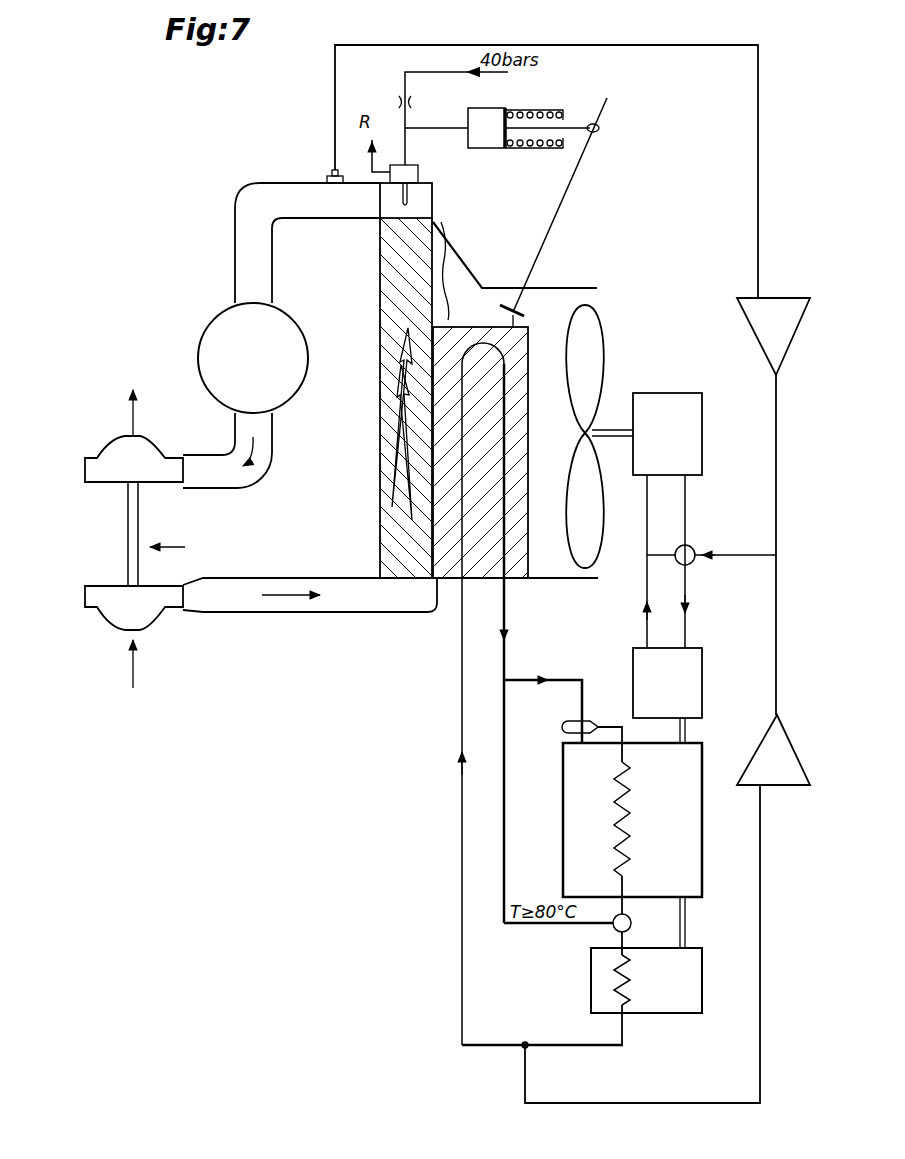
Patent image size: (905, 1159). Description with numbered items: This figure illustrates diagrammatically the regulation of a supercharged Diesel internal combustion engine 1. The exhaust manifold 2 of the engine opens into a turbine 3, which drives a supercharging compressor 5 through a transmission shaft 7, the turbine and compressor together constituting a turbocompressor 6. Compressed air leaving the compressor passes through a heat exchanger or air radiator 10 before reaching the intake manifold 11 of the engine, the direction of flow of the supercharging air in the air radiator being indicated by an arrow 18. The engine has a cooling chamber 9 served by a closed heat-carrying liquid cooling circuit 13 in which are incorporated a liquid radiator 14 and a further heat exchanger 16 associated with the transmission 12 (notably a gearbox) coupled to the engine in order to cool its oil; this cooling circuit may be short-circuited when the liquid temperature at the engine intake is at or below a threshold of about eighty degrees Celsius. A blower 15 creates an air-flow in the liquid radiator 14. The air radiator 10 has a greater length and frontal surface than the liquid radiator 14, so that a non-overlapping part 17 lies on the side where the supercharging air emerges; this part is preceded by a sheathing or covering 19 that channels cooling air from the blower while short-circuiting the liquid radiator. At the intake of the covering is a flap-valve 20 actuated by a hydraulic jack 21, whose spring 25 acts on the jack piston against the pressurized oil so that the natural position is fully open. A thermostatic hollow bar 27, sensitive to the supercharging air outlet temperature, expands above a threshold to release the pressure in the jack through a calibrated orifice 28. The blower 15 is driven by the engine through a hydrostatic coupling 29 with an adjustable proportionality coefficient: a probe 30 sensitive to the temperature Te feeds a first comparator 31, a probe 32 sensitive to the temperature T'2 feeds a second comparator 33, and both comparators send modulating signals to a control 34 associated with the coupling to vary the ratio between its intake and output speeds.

The internal combustion engine 1 is at (300, 370).
The exhaust manifold 2 is at (265, 423).
The turbine 3 is at (158, 455).
The supercharging compressor 5 is at (165, 612).
The turbocompressor 6 is at (176, 546).
The transmission shaft 7 is at (138, 517).
The cooling chamber 9 is at (630, 830).
The heat exchanger (air radiator) 10 is at (388, 446).
The intake manifold 11 is at (272, 294).
The transmission 12 is at (697, 993).
The closed heat-carrying liquid cooling circuit 13 is at (504, 832).
The heat exchanger (liquid radiator) 14 is at (452, 580).
The blower 15 is at (618, 398).
The heat exchanger 16 is at (618, 975).
The non-overlapping part 17 is at (455, 270).
The arrow 18 is at (400, 422).
The sheathing or covering 19 is at (485, 277).
The flap-valve 20 is at (528, 302).
The hydraulic jack 21 is at (523, 148).
The spring 25 is at (535, 118).
The hollow bar 27 is at (414, 201).
The calibrated orifice 28 is at (411, 104).
The hydrostatic coupling 29 is at (642, 474).
The probe 30 is at (520, 1048).
The first comparator 31 is at (759, 748).
The probe 32 is at (330, 194).
The second comparator 33 is at (754, 330).
The control 34 is at (690, 547).